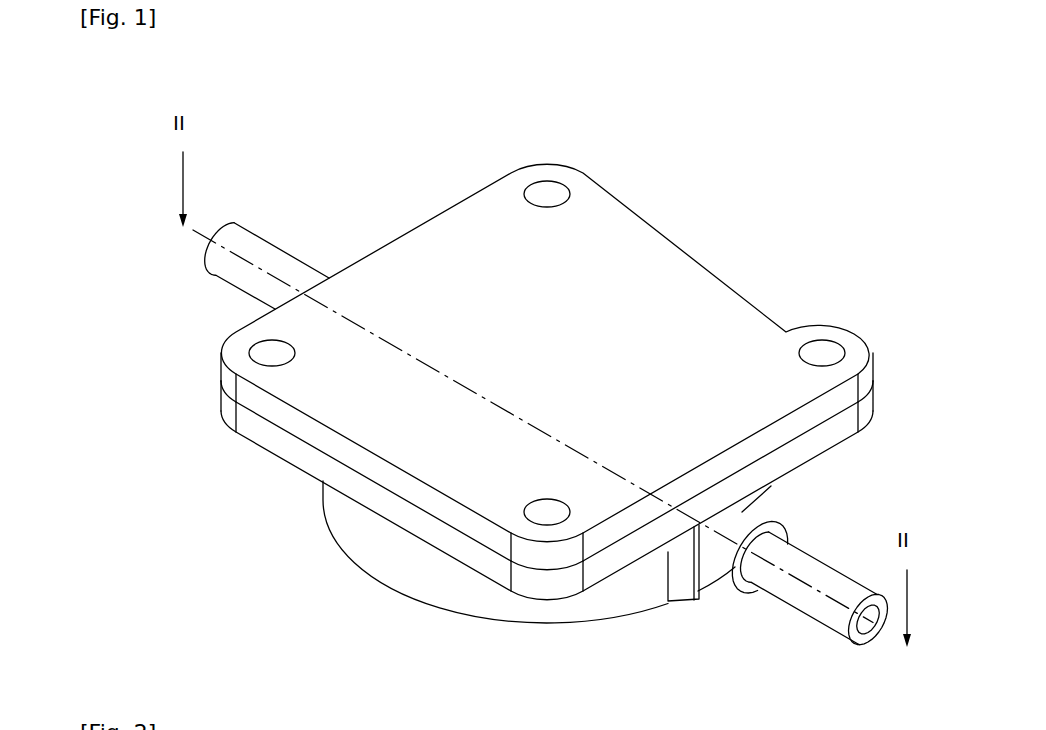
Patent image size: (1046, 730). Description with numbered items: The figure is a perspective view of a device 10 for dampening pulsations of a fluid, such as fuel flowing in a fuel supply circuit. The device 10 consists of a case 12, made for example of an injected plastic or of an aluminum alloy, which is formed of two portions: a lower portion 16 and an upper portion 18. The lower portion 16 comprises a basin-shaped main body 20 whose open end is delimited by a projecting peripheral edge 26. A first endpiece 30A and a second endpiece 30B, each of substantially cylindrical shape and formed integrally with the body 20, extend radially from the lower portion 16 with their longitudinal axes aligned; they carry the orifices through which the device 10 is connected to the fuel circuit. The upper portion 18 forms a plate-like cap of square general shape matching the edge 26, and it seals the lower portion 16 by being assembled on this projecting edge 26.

The device for dampening pulsations 10 is at (752, 234).
The case 12 is at (602, 220).
The lower portion 16 is at (373, 538).
The upper portion 18 is at (450, 237).
The main body 20 is at (627, 577).
The peripheral edge 26 is at (307, 460).
The first endpiece 30A is at (275, 273).
The second endpiece 30B is at (800, 563).